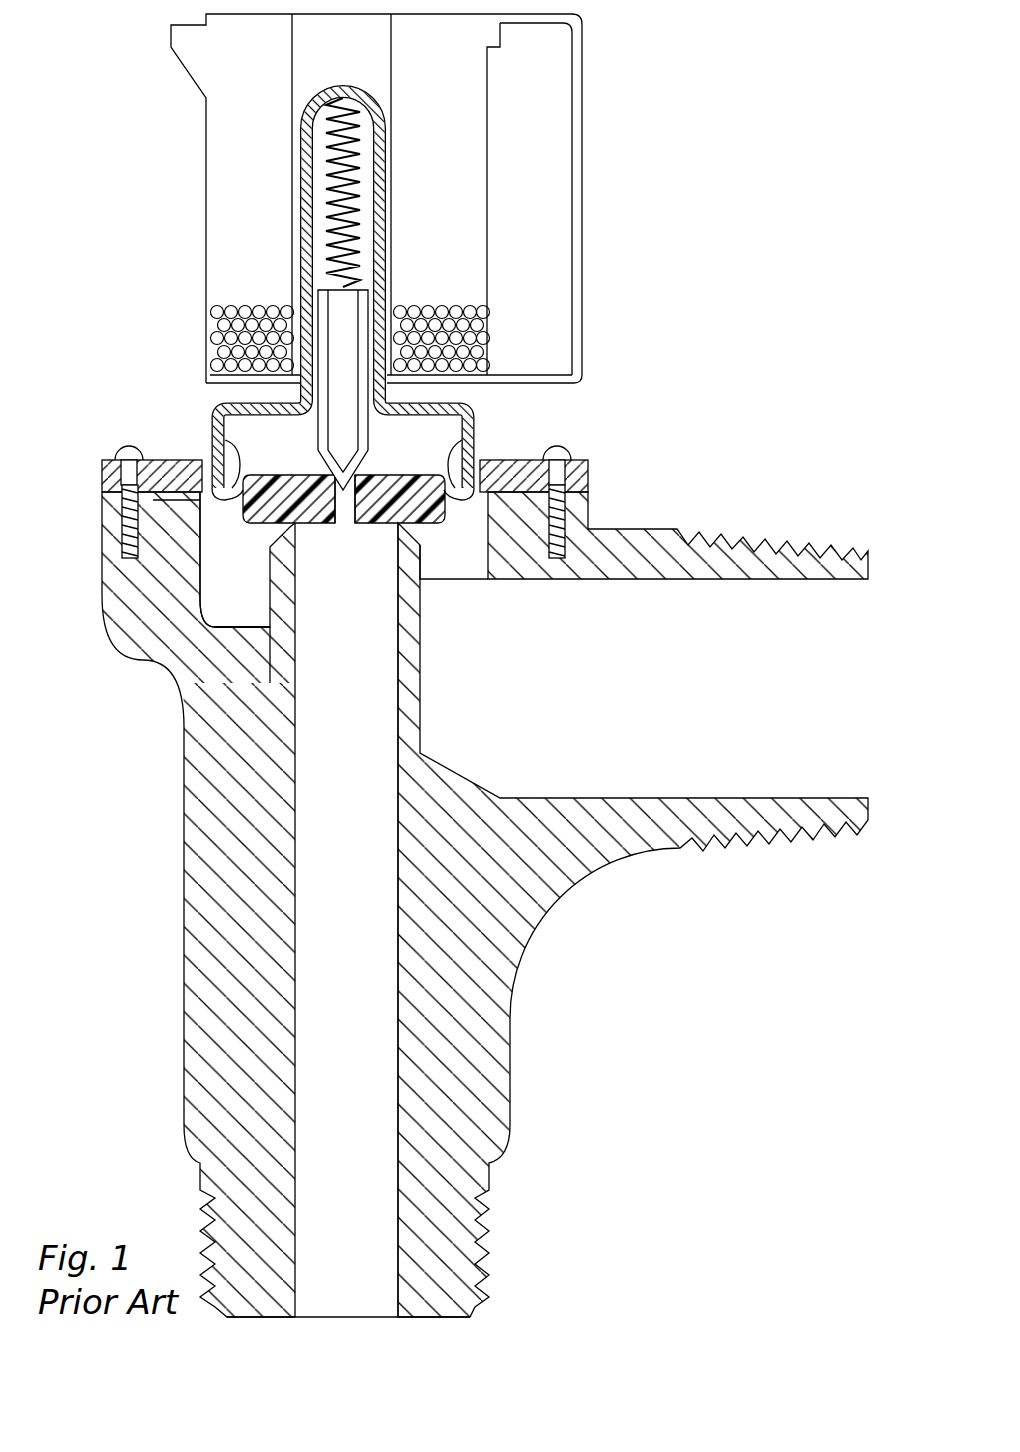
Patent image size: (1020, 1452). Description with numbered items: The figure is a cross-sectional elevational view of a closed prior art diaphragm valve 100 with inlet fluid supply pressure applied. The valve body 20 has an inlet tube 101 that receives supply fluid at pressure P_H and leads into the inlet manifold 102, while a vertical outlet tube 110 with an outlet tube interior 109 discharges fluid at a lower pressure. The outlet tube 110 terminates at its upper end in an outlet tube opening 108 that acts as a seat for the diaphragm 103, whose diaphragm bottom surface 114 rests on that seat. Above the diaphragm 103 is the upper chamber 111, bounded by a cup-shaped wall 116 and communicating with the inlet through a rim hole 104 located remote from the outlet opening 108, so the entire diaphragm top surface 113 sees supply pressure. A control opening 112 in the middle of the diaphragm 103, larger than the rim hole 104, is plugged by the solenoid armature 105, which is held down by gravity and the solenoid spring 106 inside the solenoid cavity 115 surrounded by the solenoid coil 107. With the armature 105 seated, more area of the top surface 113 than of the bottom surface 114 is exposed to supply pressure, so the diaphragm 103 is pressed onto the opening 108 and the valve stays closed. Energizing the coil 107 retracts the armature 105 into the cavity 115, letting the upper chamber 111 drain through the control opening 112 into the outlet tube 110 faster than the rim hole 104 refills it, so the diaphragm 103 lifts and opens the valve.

The prior art regulator valve assembly 100 is at (449, 665).
The inlet tube 101 is at (827, 610).
The inlet manifold 102 is at (212, 550).
The diaphragm 103 is at (232, 432).
The rim hole 104 is at (462, 412).
The solenoid armature 105 is at (318, 307).
The solenoid spring 106 is at (330, 150).
The solenoid coil 107 is at (210, 213).
The outlet tube opening 108 is at (288, 528).
The outlet tube interior 109 is at (367, 705).
The outlet tube 110 is at (235, 627).
The upper chamber 111 is at (232, 410).
The control opening 112 is at (336, 526).
The diaphragm top surface 113 is at (386, 474).
The diaphragm bottom surface 114 is at (440, 526).
The solenoid cavity 115 is at (300, 268).
The cup lip 116 is at (478, 450).
The valve body 20 is at (485, 904).